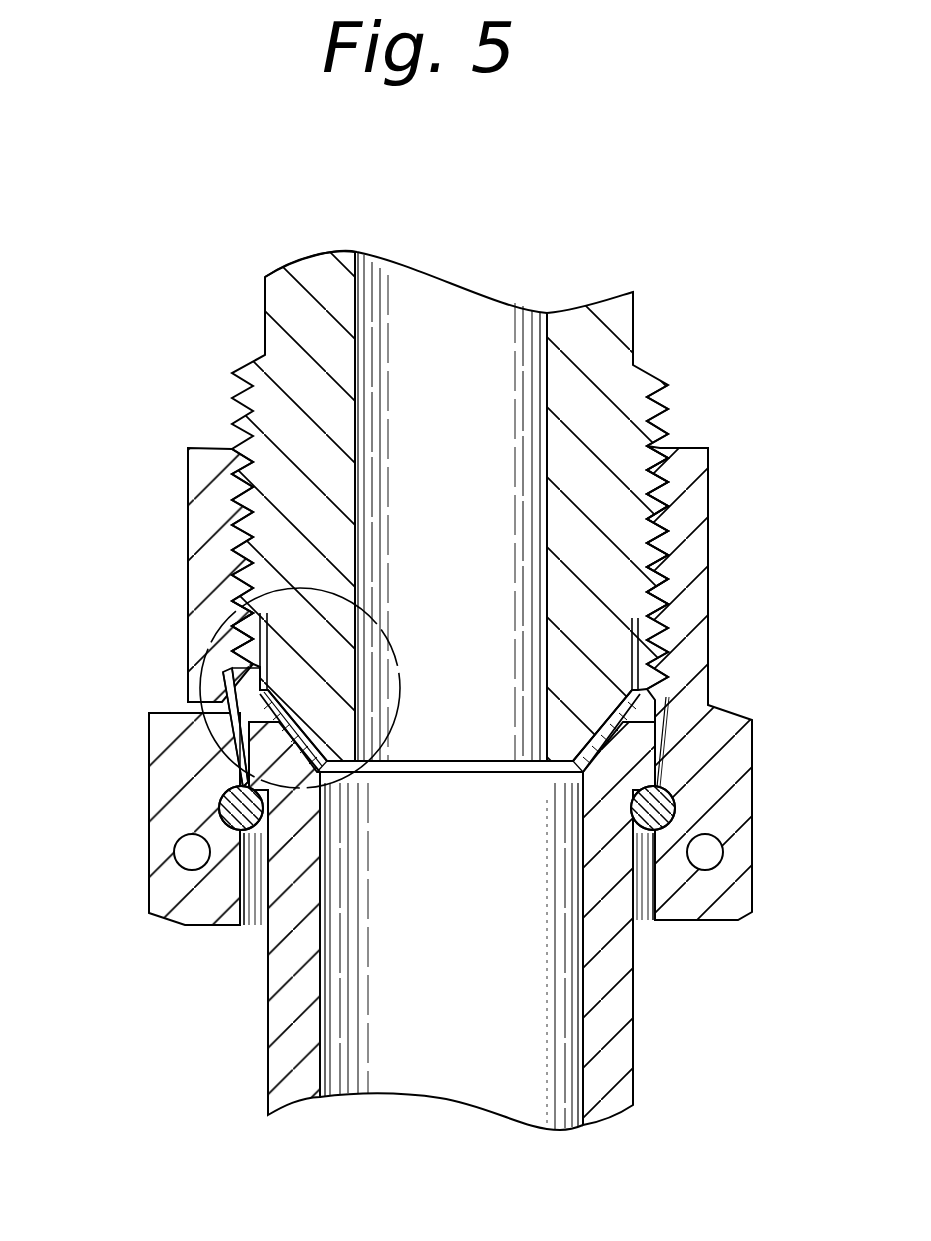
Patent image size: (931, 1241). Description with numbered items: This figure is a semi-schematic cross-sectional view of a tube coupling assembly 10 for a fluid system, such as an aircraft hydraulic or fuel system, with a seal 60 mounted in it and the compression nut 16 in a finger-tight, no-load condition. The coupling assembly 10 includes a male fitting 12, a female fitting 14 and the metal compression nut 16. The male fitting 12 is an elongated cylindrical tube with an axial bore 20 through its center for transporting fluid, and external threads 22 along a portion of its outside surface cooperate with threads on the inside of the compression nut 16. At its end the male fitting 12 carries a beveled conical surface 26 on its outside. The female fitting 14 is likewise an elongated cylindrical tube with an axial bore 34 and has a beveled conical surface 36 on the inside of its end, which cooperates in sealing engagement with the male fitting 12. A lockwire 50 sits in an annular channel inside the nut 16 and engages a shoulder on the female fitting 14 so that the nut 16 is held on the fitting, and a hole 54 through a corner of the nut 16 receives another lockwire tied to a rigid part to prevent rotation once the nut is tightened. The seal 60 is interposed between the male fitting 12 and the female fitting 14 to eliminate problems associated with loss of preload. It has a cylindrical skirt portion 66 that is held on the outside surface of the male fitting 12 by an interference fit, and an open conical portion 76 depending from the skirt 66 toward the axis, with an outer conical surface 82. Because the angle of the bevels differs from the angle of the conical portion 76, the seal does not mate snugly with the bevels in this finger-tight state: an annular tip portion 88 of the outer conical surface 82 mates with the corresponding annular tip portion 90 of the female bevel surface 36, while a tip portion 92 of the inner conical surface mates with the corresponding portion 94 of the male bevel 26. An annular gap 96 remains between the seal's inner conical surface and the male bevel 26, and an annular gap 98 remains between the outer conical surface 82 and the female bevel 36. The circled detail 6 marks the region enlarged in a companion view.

The tube coupling assembly 10 is at (218, 335).
The male fitting 12 is at (650, 318).
The female fitting 14 is at (650, 1008).
The compression nut 16 is at (698, 582).
The axial bore 20 is at (468, 456).
The external threads 22 is at (670, 408).
The beveled conical surface 26 is at (262, 700).
The axial bore 34 is at (464, 998).
The beveled conical surface 36 is at (345, 785).
The lockwire 50 is at (667, 808).
The hole 54 is at (710, 856).
The seal 60 is at (226, 704).
The cylindrical skirt portion 66 is at (262, 665).
The conical portion 76 is at (609, 703).
The outer conical surface 82 is at (645, 704).
The annular tip portion 88 is at (236, 796).
The annular tip portion 90 is at (222, 800).
The tip portion 92 is at (230, 714).
The portion of male bevel 94 is at (264, 675).
The annular gap 96 is at (294, 759).
The annular gap 98 is at (237, 742).
The detail view circle 6 is at (383, 750).